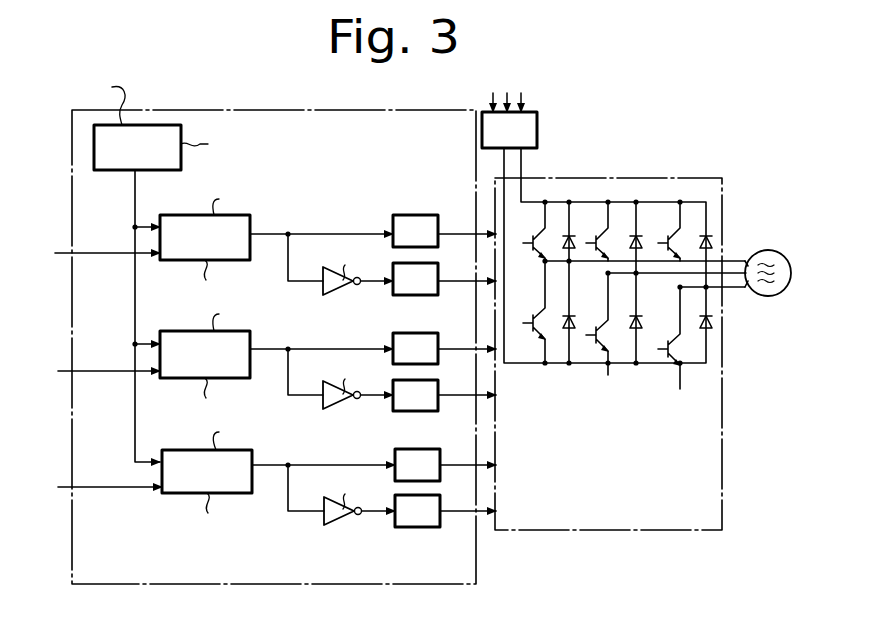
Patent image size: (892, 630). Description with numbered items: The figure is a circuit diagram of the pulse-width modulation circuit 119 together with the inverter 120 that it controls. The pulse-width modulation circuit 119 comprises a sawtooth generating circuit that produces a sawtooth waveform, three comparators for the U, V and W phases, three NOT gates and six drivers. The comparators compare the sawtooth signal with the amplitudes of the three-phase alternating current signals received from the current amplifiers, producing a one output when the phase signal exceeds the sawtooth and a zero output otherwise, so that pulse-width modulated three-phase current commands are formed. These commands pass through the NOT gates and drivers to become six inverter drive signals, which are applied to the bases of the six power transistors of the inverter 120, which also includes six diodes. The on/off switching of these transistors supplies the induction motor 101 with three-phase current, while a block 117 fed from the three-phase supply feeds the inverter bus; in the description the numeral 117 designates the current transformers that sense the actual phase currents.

The induction motor 101 is at (766, 250).
The current transformers 117 is at (537, 130).
The pulse-width modulation circuit 119 is at (270, 584).
The inverter 120 is at (641, 178).